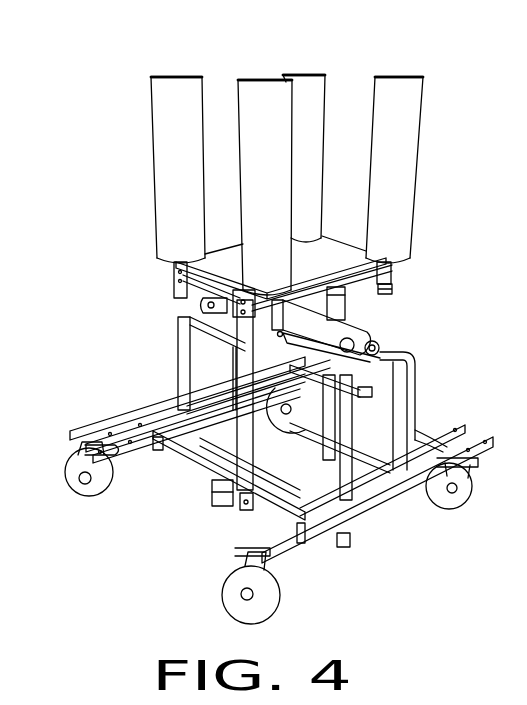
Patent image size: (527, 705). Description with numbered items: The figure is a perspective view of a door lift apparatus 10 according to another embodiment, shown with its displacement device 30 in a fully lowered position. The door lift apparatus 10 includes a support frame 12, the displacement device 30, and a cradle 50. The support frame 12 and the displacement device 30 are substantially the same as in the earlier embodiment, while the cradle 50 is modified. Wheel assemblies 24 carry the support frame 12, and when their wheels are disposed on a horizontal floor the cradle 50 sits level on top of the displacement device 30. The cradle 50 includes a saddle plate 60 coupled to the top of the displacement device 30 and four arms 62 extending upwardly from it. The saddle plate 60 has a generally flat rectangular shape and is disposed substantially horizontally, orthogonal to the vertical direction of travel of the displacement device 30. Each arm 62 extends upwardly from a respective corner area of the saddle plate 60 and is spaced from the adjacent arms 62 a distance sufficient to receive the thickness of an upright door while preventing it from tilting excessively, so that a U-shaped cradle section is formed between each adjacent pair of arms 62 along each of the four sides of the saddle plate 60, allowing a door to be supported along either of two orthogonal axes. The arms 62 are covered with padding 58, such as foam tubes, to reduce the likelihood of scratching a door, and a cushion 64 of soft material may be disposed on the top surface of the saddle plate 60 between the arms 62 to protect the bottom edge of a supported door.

The door lift apparatus 10 is at (100, 104).
The support frame 12 is at (128, 395).
The wheel assemblies 24 is at (208, 586).
The displacement device 30 is at (387, 329).
The cradle 50 is at (162, 298).
The padding 58 is at (250, 181).
The saddle plate 60 is at (175, 283).
The arms 62 is at (265, 80).
The cushion 64 is at (327, 257).